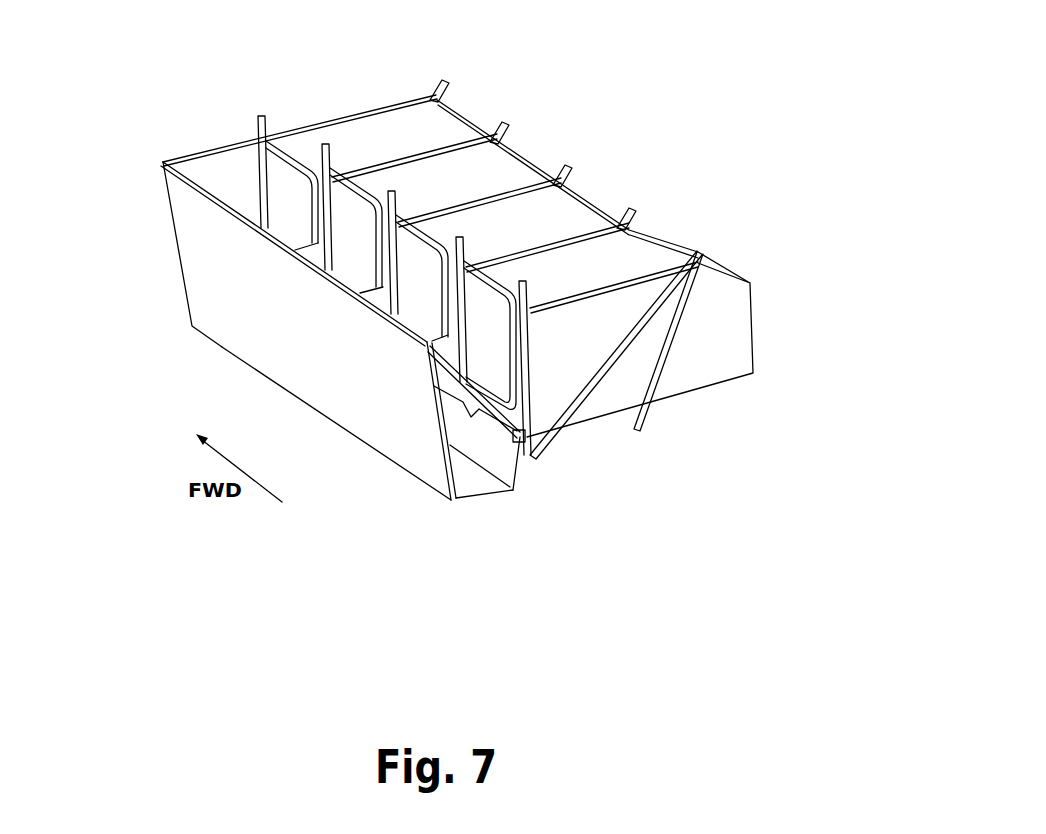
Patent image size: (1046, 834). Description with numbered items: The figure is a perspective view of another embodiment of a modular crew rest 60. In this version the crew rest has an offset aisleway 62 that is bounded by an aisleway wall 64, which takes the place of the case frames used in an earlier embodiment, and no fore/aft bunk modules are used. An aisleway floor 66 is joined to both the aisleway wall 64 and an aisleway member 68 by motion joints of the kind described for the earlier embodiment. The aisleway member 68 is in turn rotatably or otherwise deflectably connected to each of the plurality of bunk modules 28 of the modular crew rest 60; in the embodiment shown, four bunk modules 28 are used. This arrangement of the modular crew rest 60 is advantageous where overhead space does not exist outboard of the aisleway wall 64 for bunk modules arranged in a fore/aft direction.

The modular crew rest 60 is at (410, 290).
The bunk modules 28 is at (493, 167).
The offset aisleway 62 is at (170, 212).
The aisleway wall 64 is at (222, 347).
The aisleway floor 66 is at (477, 483).
The aisleway member 68 is at (507, 460).